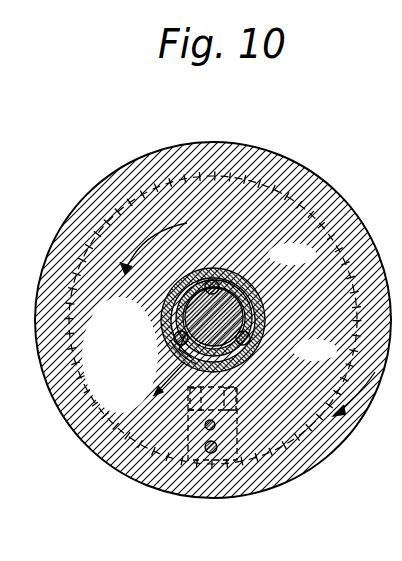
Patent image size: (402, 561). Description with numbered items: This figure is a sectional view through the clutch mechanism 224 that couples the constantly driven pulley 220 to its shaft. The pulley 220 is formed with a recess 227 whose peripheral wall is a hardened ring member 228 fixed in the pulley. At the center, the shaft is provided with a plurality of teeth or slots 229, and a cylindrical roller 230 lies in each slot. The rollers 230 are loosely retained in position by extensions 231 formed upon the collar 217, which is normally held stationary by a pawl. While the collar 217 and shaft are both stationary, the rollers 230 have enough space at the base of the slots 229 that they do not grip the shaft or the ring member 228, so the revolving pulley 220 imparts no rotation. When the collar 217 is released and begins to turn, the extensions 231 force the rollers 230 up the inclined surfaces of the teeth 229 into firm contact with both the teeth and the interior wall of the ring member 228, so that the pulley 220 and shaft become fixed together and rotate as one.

The pulley 220 is at (105, 179).
The clutch mechanism 224 is at (243, 260).
The collar 217 is at (185, 316).
The recess 227 is at (178, 324).
The hardened ring member 228 is at (175, 343).
The cylindrical rollers 230 is at (180, 352).
The teeth or slots 229 is at (168, 382).
The extensions 231 is at (246, 358).